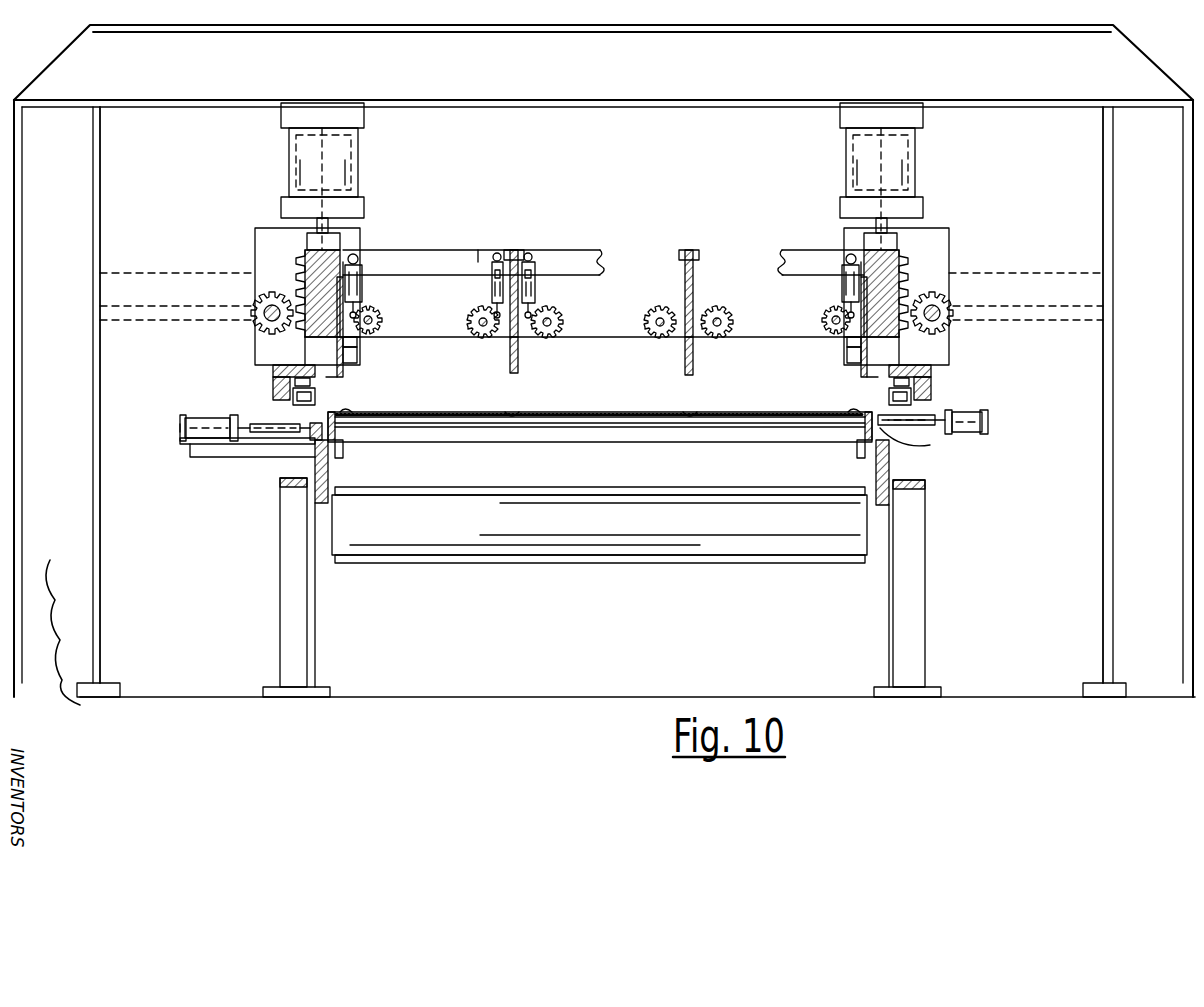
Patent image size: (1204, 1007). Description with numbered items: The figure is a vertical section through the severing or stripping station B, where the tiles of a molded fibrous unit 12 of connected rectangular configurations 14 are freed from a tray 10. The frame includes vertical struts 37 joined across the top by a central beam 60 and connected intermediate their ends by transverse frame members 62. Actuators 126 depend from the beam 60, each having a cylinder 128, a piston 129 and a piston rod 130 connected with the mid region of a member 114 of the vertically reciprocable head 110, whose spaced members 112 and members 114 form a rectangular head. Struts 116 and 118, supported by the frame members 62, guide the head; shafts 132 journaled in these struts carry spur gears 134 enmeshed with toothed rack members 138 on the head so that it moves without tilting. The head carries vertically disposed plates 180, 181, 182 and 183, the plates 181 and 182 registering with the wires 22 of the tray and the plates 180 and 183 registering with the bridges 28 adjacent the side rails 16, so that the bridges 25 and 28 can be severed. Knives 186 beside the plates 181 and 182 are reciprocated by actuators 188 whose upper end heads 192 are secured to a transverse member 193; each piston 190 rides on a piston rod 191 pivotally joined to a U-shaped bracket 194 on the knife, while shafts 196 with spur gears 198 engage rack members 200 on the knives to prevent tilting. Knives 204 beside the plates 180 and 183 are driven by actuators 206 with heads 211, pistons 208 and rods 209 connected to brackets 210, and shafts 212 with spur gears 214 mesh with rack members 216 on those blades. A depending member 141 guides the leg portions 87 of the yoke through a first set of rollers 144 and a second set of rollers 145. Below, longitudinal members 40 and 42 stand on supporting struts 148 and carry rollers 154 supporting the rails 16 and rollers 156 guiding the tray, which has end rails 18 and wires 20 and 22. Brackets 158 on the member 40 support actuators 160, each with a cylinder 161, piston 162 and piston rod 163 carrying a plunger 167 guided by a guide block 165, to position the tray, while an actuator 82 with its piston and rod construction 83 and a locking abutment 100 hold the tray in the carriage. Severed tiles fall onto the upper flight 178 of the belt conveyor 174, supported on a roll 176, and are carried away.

The central beam 60 is at (608, 67).
The vertical frame members 37 is at (62, 157).
The actuators 126 is at (276, 138).
The cylinder 128 is at (290, 162).
The piston 129 is at (366, 136).
The piston rod 130 is at (352, 152).
The members 114 is at (312, 248).
The strut 118 is at (282, 232).
The strut 116 is at (935, 240).
The toothed rack means 138 is at (303, 264).
The spur gears 134 is at (262, 300).
The shafts 132 is at (258, 314).
The frame members 62 is at (160, 272).
The head construction 110 is at (579, 242).
The spaced members 112 is at (782, 254).
The severing or stripping station B is at (603, 218).
The transversely extending member 193 is at (478, 250).
The upper end heads 192 is at (496, 254).
The piston 190 is at (558, 243).
The piston rod 191 is at (492, 288).
The fluid operated actuator 188 is at (492, 299).
The shafts 196 is at (484, 322).
The spur gears 198 is at (484, 326).
The U-shaped bracket 194 is at (498, 318).
The rack member 200 is at (495, 318).
The severing knives 186 is at (509, 366).
The plate 181 is at (514, 373).
The plate 182 is at (685, 380).
The piston 208 is at (362, 264).
The heads 211 is at (397, 240).
The rod 209 is at (345, 276).
The fluid operated actuators 206 is at (371, 287).
The spur gear 214 is at (365, 312).
The shaft 212 is at (382, 322).
The bracket 210 is at (358, 340).
The rack member 216 is at (358, 352).
The severing blade 204 is at (343, 370).
The plate 183 is at (868, 380).
The plate 180 is at (340, 380).
The member 141 is at (273, 368).
The second set of rollers 145 is at (280, 378).
The first set of rollers 144 is at (273, 392).
The leg portions of the yoke 87 is at (315, 394).
The fluid operated actuators 160 is at (209, 406).
The piston 162 is at (180, 420).
The brackets 158 is at (180, 434).
The cylinder 161 is at (200, 440).
The piston rod 163 is at (240, 444).
The guide block 165 is at (275, 432).
The plunger or abutment 167 is at (300, 426).
The rollers 156 is at (310, 432).
The longitudinally extending member 40 is at (310, 450).
The fluid operated actuator 82 is at (965, 412).
The piston and rod construction 83 is at (982, 414).
The locking means 100 is at (932, 426).
The end rails 18 is at (560, 443).
The rectangular configurations 14 is at (440, 412).
The side frame members or rails 16 is at (338, 445).
The rollers 154 is at (339, 458).
The bridges or connectors 28 is at (346, 416).
The wires or linear members 20 is at (425, 440).
The wires 22 is at (520, 440).
The tray or carrier 10 is at (516, 458).
The bridges or bridge connections 25 is at (511, 413).
The molded fibrous unit 12 is at (548, 405).
The longitudinally extending member 42 is at (889, 470).
The upper flight 178 is at (453, 478).
The roll 176 is at (334, 540).
The conveyor 174 is at (373, 571).
The supporting struts 148 is at (280, 660).